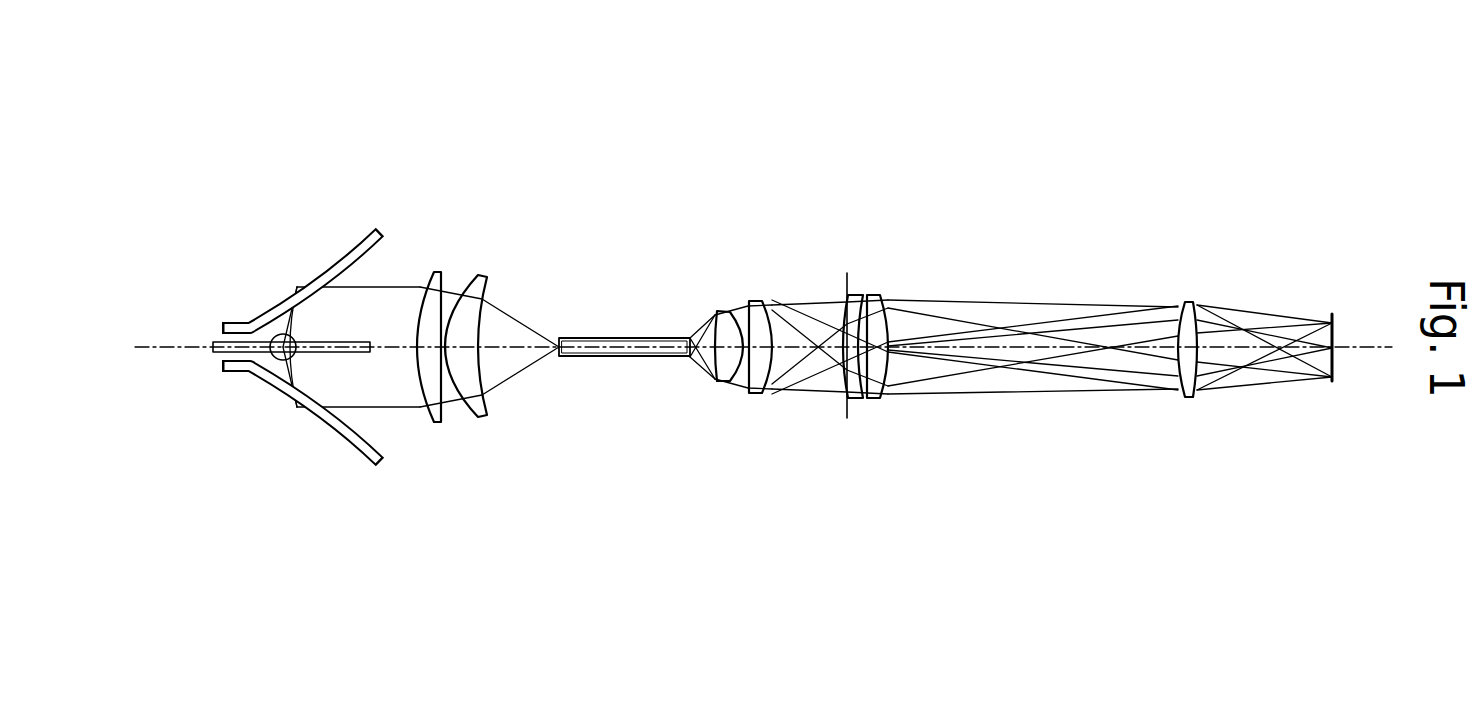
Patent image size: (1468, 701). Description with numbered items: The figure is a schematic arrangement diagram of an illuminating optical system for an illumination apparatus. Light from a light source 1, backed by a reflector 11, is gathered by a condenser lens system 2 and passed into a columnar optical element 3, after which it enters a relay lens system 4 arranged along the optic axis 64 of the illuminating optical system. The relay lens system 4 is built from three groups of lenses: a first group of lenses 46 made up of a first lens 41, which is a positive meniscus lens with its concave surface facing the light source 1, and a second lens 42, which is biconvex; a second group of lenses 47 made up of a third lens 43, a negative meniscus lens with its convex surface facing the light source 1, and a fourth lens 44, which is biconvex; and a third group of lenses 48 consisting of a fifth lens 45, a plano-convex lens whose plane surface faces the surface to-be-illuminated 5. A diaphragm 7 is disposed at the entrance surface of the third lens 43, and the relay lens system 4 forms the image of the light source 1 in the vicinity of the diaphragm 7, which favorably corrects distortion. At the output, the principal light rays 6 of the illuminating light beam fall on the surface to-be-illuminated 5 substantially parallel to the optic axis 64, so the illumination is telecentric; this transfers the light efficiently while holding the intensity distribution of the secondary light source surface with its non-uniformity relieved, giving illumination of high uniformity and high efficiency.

The light source 1 is at (316, 437).
The reflector 11 is at (301, 271).
The condenser lens system 2 is at (498, 247).
The columnar optical element 3 is at (624, 453).
The relay lens system 4 is at (1220, 88).
The first lens 41 is at (723, 281).
The second lens 42 is at (776, 262).
The third lens 43 is at (856, 272).
The fourth lens 44 is at (896, 266).
The fifth lens 45 is at (1178, 442).
The first group of lenses 46 is at (748, 324).
The second group of lenses 47 is at (873, 326).
The third group of lenses 48 is at (1164, 442).
The diaphragm 7 is at (821, 420).
The surface to-be-illuminated 5 is at (1345, 430).
The principal light rays 6 is at (1264, 434).
The optic axis 64 is at (763, 273).